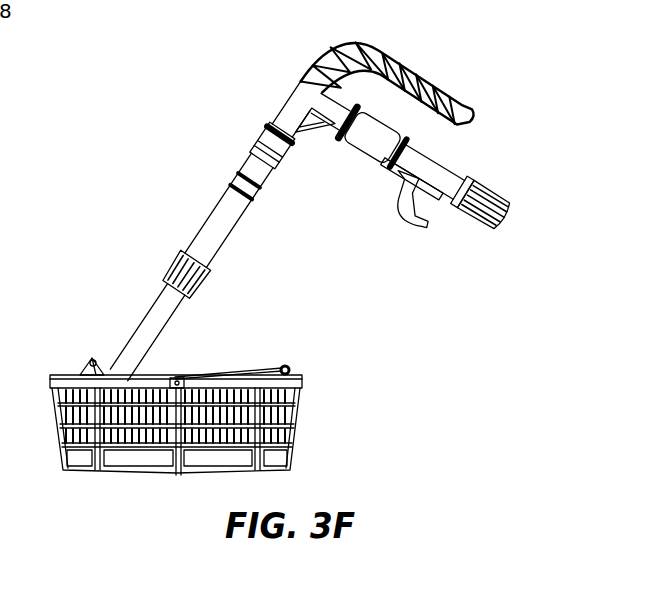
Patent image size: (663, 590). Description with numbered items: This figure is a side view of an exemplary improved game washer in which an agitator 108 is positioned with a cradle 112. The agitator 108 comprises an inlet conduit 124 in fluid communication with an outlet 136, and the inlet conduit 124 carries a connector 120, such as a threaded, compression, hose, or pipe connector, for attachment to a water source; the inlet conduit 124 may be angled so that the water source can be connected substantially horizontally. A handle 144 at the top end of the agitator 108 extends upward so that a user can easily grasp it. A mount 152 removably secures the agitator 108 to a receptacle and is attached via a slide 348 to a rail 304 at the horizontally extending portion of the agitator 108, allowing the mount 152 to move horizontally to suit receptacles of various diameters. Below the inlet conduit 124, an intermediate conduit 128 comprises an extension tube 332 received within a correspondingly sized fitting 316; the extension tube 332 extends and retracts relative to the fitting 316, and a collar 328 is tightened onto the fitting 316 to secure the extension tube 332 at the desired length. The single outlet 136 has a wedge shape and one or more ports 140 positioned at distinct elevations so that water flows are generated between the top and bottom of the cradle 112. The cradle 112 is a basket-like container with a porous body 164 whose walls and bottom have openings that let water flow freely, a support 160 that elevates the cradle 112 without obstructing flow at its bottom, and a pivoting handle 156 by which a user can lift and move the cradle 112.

The agitator 108 is at (191, 143).
The cradle 112 is at (333, 437).
The connector 120 is at (493, 197).
The inlet conduit 124 is at (279, 112).
The intermediate conduit 128 is at (138, 258).
The outlet 136 is at (93, 358).
The port 140 is at (86, 366).
The handle 144 is at (399, 60).
The mount 152 is at (408, 228).
The handle 156 is at (285, 364).
The support 160 is at (77, 471).
The body 164 is at (47, 381).
The rail 304 is at (436, 214).
The fitting 316 is at (240, 221).
The collar 328 is at (203, 286).
The extension tube 332 is at (164, 327).
The slide 348 is at (413, 183).